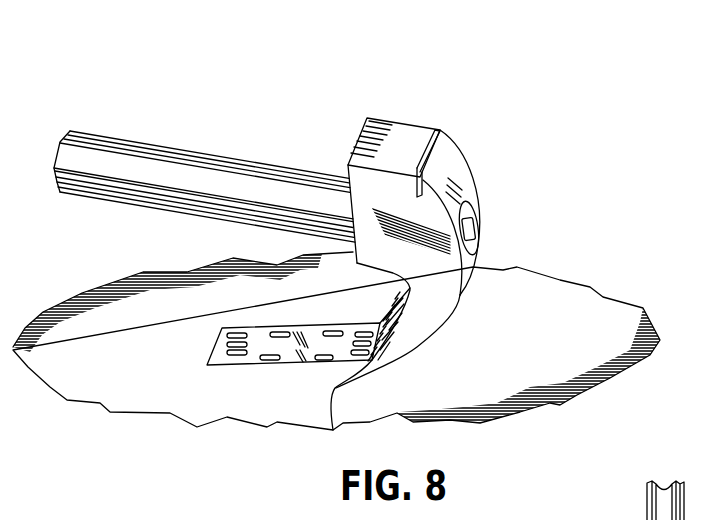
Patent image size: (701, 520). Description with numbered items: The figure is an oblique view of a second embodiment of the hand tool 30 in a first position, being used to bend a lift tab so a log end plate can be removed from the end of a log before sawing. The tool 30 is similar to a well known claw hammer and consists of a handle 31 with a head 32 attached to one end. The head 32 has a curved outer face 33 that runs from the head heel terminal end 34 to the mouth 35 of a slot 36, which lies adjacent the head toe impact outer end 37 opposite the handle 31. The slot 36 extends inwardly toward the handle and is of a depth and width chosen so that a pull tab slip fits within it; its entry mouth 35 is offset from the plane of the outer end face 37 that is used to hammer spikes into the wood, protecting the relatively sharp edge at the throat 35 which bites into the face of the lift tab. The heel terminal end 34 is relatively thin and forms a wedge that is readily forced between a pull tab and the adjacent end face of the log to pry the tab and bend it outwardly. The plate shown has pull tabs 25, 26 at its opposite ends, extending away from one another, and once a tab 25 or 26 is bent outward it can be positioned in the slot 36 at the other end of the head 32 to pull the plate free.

The pull tab 25 is at (220, 338).
The pull tab 26 is at (383, 317).
The hand tool 30 is at (148, 112).
The handle 31 is at (215, 177).
The head 32 is at (472, 305).
The curved outer face 33 is at (480, 233).
The head heel terminal end 34 is at (333, 430).
The mouth 35 is at (435, 130).
The slot 36 is at (430, 182).
The head toe impact outer end 37 is at (407, 132).